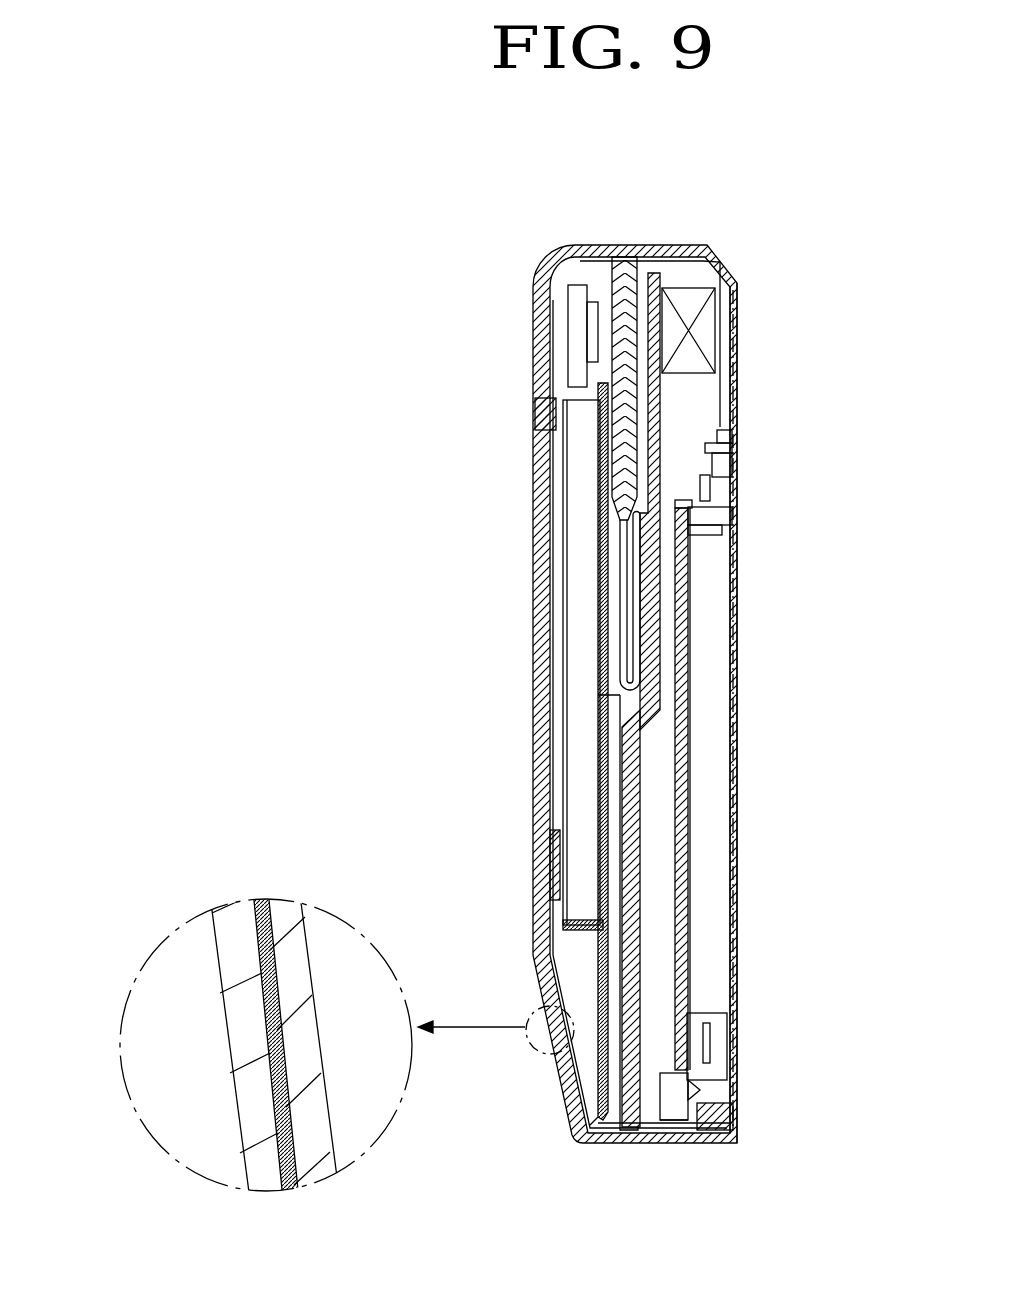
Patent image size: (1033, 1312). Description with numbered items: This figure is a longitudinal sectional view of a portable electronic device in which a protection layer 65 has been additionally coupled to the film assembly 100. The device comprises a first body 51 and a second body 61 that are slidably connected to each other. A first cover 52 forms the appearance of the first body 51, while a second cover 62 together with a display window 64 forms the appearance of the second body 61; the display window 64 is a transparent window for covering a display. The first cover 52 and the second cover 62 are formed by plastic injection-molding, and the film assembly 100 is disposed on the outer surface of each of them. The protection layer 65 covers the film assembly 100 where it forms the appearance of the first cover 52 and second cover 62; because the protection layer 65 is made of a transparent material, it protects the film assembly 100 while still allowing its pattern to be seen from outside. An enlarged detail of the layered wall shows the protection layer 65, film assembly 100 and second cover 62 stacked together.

The first body 51 is at (756, 241).
The first cover 52 is at (740, 303).
The second body 61 is at (540, 226).
The second cover 62 is at (533, 302).
The display window 64 is at (545, 572).
The protection layer 65 is at (225, 990).
The film assembly 100 is at (190, 897).